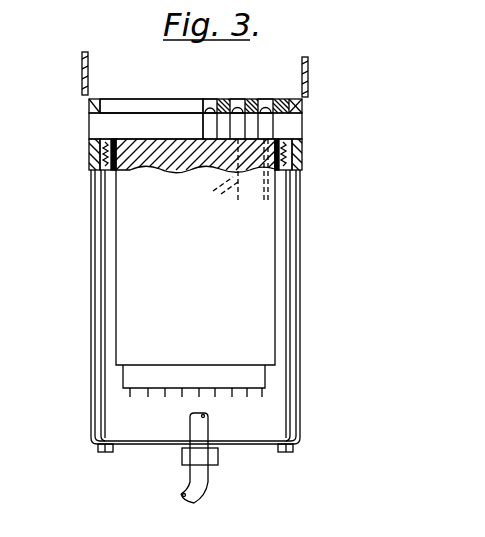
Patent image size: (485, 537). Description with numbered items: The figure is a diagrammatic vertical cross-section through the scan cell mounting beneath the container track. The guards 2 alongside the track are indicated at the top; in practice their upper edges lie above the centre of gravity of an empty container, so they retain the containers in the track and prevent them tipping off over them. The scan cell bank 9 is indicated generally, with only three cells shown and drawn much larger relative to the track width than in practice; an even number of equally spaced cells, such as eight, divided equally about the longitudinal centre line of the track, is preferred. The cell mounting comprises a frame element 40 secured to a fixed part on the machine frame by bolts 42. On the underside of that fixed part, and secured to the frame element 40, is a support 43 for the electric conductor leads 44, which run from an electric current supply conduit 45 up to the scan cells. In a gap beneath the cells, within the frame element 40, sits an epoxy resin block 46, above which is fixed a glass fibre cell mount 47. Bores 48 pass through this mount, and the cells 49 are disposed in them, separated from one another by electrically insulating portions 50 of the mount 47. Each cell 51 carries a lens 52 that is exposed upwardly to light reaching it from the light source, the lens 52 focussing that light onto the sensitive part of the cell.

The guards 2 is at (81, 73).
The scan cell bank 9 is at (74, 119).
The frame element 40 is at (91, 258).
The bolts 42 is at (102, 297).
The support 43 is at (195, 283).
The electric conductor leads 44 is at (232, 177).
The electric current supply conduit 45 is at (192, 477).
The epoxy resin block 46 is at (157, 158).
The glass fibre cell mount 47 is at (146, 122).
The bores 48 is at (202, 129).
The cells 49 is at (212, 105).
The electrically insulating portions 50 is at (259, 105).
The cell 51 is at (266, 131).
The lens 52 is at (265, 106).